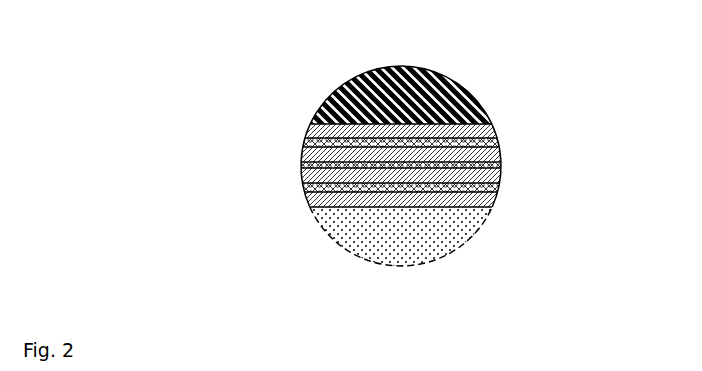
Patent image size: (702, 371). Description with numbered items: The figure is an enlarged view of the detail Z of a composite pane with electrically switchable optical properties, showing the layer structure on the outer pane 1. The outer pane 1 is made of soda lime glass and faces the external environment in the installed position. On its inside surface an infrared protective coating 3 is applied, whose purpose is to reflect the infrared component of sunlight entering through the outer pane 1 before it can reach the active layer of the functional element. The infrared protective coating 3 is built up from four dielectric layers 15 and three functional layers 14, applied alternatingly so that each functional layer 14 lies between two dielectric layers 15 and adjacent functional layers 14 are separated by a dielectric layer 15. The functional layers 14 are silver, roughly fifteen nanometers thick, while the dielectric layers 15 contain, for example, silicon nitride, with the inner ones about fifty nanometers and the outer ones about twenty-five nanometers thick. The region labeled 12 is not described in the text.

The outer pane 1 is at (401, 70).
The detail Z is at (335, 93).
The infrared protective coating 3 is at (432, 163).
The dielectric layer 15 is at (493, 130).
The functional layer 14 is at (498, 141).
The substrate 12 is at (401, 250).